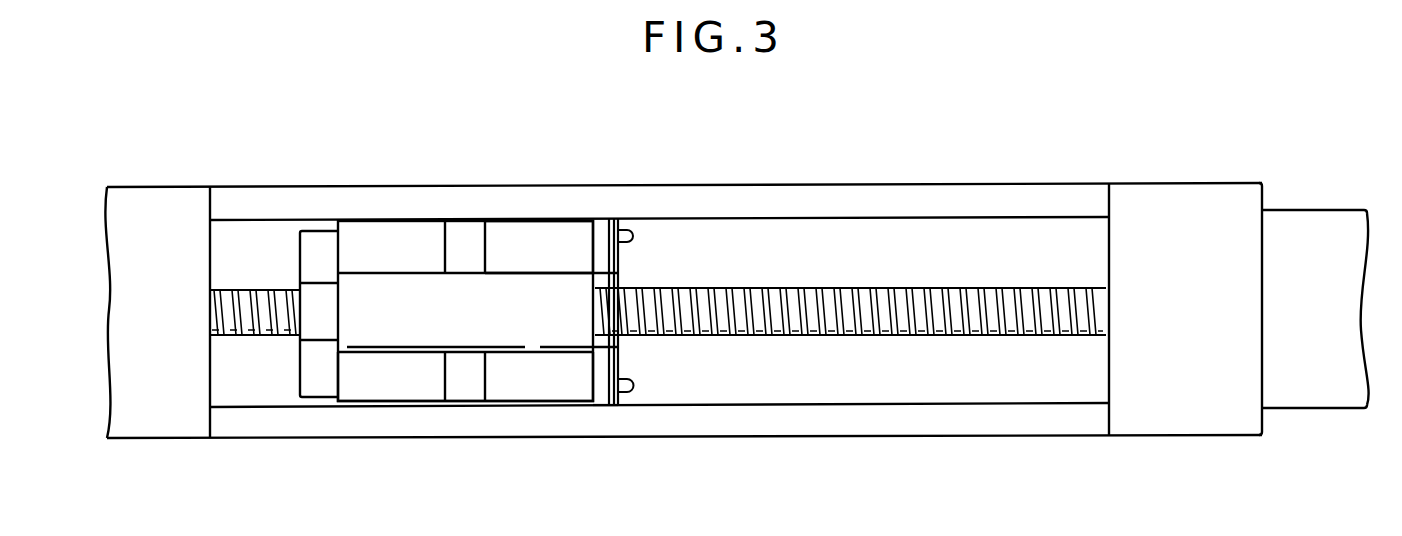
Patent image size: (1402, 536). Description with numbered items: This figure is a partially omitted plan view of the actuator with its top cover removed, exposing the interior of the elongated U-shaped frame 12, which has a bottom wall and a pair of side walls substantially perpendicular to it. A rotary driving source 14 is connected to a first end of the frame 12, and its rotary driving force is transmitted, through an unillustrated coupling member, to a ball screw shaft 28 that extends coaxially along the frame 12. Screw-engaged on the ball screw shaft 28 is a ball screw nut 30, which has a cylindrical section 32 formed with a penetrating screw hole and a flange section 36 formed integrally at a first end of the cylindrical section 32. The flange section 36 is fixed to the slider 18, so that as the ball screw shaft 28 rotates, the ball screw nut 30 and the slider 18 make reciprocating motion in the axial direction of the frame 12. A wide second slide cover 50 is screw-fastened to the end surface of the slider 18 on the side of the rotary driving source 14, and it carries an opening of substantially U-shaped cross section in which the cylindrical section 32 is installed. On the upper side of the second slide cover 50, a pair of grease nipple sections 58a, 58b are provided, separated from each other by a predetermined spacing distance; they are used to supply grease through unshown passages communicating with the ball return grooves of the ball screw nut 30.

The frame 12 is at (928, 437).
The rotary driving source 14 is at (1307, 230).
The slider 18 is at (512, 247).
The ball screw shaft 28 is at (855, 298).
The ball screw nut 30 is at (403, 295).
The cylindrical section 32 is at (425, 335).
The flange section 36 is at (315, 230).
The second slide cover 50 is at (600, 388).
The grease nipple section 58a is at (628, 232).
The grease nipple section 58b is at (636, 394).